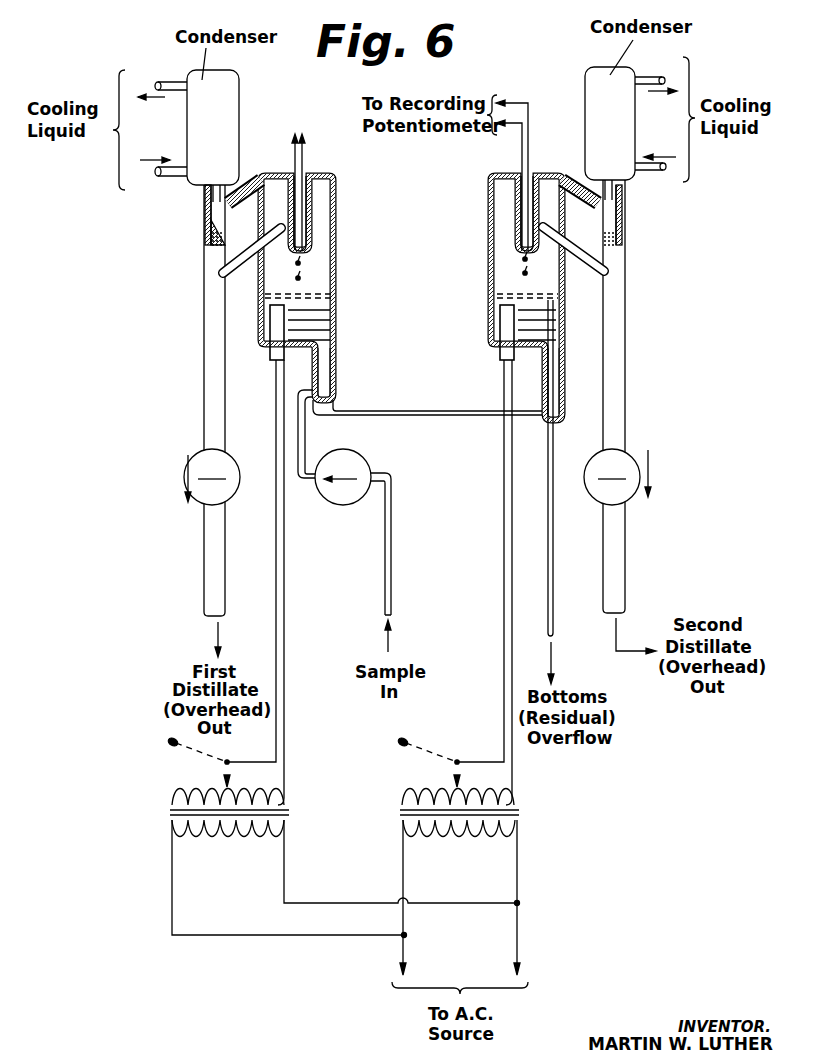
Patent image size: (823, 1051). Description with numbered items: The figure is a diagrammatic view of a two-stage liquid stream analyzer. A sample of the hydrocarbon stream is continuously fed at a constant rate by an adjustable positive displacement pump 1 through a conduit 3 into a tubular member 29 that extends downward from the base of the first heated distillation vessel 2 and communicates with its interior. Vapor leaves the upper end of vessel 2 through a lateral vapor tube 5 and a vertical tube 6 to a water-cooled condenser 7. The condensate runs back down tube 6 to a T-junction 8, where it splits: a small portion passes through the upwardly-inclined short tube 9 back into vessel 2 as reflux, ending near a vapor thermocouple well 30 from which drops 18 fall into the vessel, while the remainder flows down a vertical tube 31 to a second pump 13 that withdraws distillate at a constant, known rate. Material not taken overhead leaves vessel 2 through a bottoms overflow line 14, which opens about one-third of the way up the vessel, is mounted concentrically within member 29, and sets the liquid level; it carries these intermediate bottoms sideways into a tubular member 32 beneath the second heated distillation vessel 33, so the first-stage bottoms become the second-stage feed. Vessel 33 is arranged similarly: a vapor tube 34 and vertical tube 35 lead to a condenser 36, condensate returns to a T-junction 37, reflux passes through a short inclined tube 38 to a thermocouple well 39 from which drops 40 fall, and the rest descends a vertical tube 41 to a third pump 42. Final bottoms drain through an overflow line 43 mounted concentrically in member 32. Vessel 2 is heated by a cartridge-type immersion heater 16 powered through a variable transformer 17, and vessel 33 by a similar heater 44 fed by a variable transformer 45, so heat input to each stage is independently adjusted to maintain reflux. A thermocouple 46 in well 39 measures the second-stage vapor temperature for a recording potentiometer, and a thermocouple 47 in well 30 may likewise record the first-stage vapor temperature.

The adjustable positive displacement pump 1 is at (351, 498).
The first heated distillation vessel 2 is at (338, 290).
The conduit 3 is at (300, 437).
The vapor tube 5 is at (238, 202).
The vertical tube 6 is at (210, 192).
The condenser 7 is at (222, 95).
The T-junction 8 is at (228, 255).
The upwardly-inclined short tube 9 is at (245, 260).
The pump 13 is at (193, 463).
The bottoms overflow line 14 is at (312, 325).
The cartridge-type immersion heater 16 is at (278, 355).
The variable transformer 17 is at (170, 815).
The drops of reflux 18 is at (302, 277).
The tubular member 29 is at (335, 384).
The vapor thermocouple well 30 is at (313, 230).
The vertical tube 31 is at (215, 388).
The tubular member 32 is at (560, 400).
The second heated distillation vessel 33 is at (490, 310).
The vapor tube 34 is at (583, 192).
The vertical tube 35 is at (620, 225).
The condenser 36 is at (592, 82).
The T-junction 37 is at (596, 252).
The upwardly-inclined short tube 38 is at (584, 258).
The thermocouple well 39 is at (518, 205).
The drops of reflux 40 is at (521, 272).
The vertical tube 41 is at (617, 316).
The pump 42 is at (627, 460).
The bottoms overflow line 43 is at (553, 373).
The cartridge-type immersion heater 44 is at (507, 328).
The variable transformer 45 is at (522, 810).
The thermocouple 46 is at (522, 232).
The thermocouple 47 is at (298, 202).